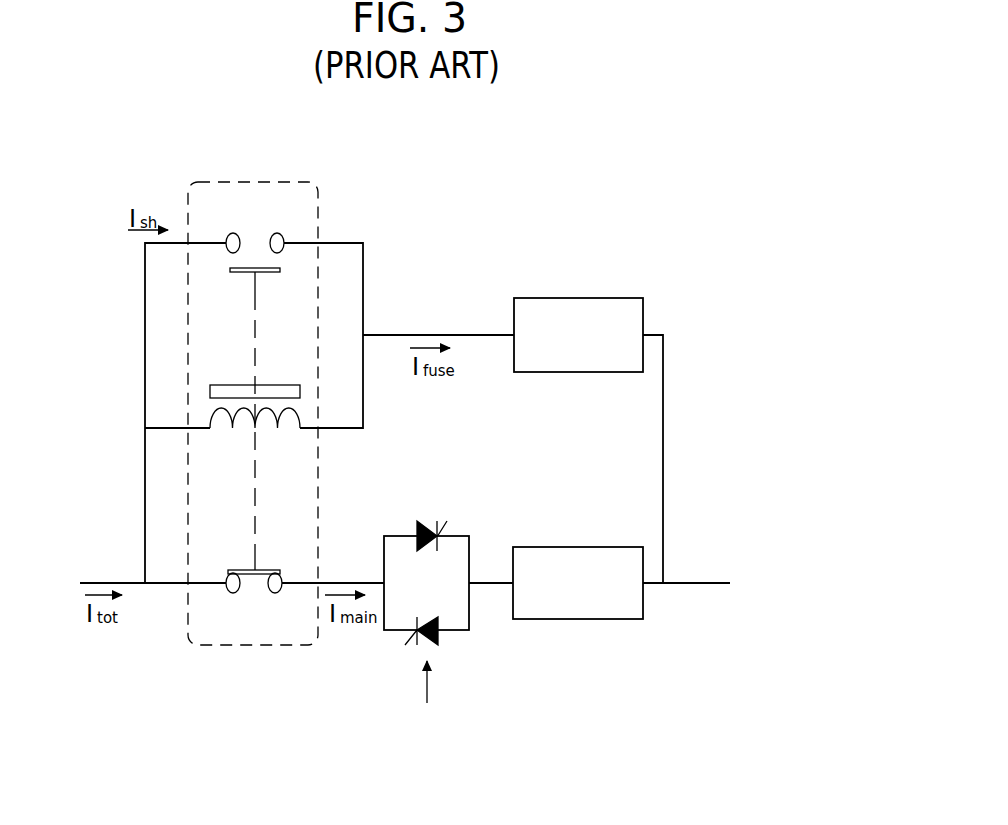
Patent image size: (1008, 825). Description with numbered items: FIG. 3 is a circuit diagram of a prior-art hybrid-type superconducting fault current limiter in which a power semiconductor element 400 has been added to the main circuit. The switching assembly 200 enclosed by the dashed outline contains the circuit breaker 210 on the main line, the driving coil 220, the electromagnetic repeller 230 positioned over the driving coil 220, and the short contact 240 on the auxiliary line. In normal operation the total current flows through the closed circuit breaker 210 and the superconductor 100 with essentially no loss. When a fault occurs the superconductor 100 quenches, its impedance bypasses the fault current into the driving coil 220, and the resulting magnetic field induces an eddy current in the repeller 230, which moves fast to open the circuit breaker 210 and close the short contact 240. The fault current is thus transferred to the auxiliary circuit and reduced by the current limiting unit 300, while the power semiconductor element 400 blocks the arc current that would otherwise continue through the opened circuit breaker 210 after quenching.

The superconductor 100 is at (567, 626).
The current limiting switch unit 200 is at (320, 176).
The circuit breaker 210 is at (252, 601).
The driving coil 220 is at (295, 440).
The electromagnetic repeller 230 is at (206, 381).
The short contact 240 is at (229, 229).
The current limiting unit 300 is at (598, 290).
The power semiconductor element 400 is at (450, 530).